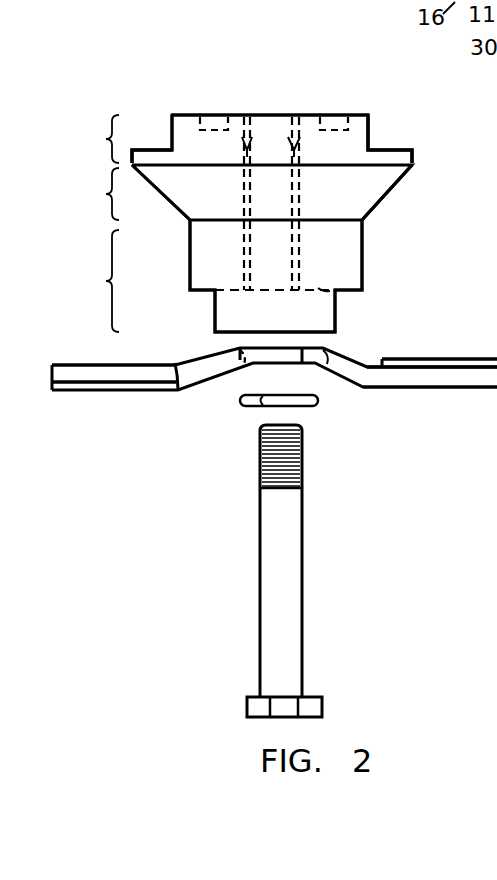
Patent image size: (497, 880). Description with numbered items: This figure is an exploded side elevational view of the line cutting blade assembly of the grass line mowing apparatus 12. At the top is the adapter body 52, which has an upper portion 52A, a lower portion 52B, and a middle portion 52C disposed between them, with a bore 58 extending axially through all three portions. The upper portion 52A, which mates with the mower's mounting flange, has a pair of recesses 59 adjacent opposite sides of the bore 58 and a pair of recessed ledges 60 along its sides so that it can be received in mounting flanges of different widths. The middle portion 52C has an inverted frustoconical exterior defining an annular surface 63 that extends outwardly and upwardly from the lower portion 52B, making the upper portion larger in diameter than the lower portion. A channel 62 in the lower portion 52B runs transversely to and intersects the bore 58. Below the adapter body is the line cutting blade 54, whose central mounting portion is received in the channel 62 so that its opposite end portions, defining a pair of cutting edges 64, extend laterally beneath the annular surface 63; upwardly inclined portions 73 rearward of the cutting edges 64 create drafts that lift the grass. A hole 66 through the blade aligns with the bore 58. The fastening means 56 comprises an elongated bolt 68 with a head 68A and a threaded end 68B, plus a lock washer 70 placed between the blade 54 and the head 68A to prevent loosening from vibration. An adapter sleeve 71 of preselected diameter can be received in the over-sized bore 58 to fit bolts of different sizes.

The grass line mowing apparatus 12 is at (163, 84).
The adapter body 52 is at (365, 218).
The upper portion of adapter body 52A is at (230, 139).
The lower portion of adapter body 52B is at (205, 276).
The middle portion of adapter body 52C is at (230, 192).
The line cutting blade 54 is at (364, 387).
The fastening means 56 is at (307, 417).
The bore 58 is at (259, 132).
The recesses 59 is at (207, 116).
The recessed ledges 60 is at (169, 150).
The channel 62 is at (336, 291).
The annular surface 63 is at (396, 186).
The cutting edges 64 is at (443, 381).
The hole 66 is at (247, 372).
The bolt 68 is at (261, 625).
The head of bolt 68A is at (247, 707).
The threaded end of bolt 68B is at (258, 467).
The lock washer 70 is at (314, 407).
The adapter sleeve 71 is at (290, 150).
The upwardly inclined portions 73 is at (126, 366).